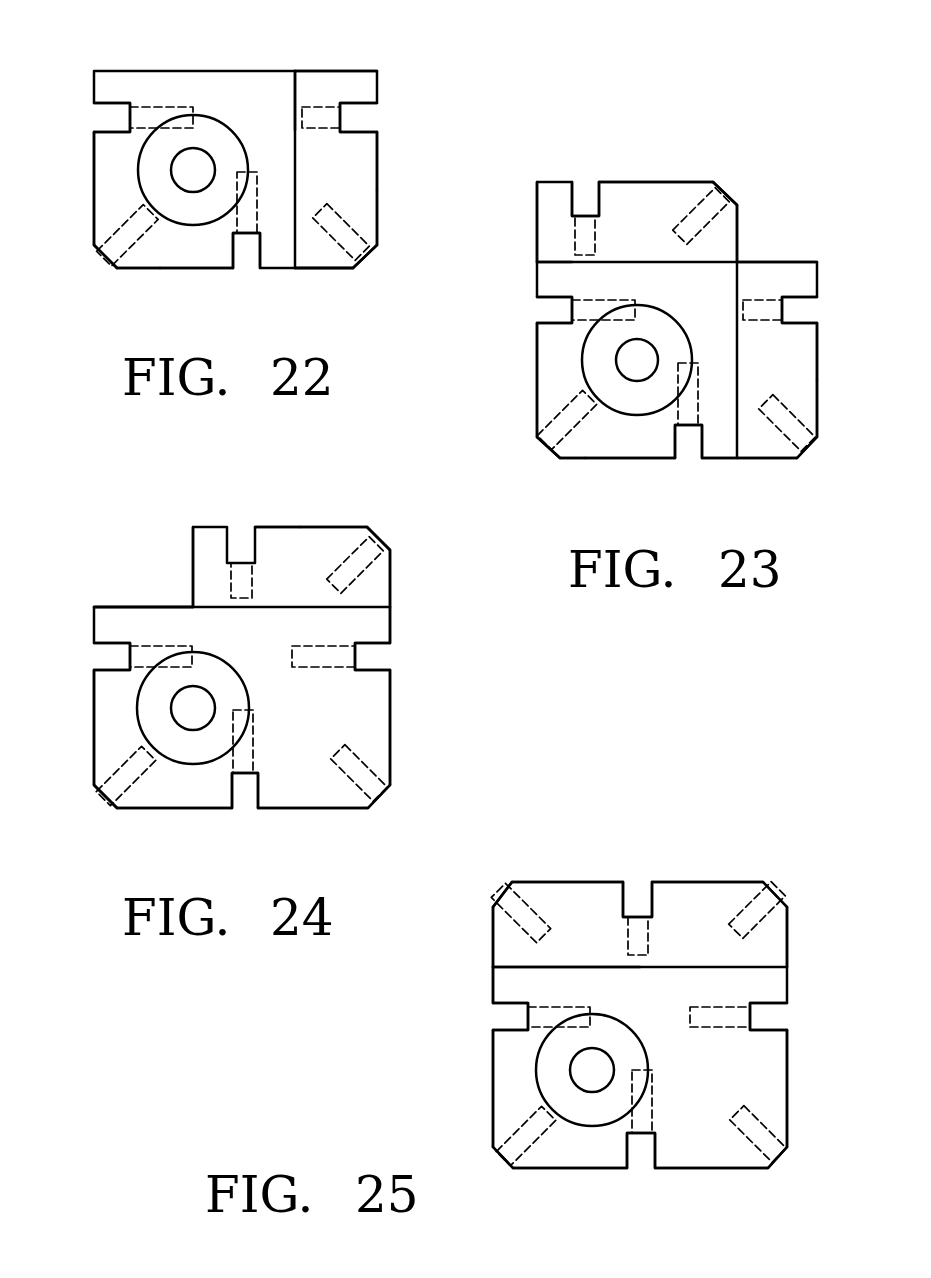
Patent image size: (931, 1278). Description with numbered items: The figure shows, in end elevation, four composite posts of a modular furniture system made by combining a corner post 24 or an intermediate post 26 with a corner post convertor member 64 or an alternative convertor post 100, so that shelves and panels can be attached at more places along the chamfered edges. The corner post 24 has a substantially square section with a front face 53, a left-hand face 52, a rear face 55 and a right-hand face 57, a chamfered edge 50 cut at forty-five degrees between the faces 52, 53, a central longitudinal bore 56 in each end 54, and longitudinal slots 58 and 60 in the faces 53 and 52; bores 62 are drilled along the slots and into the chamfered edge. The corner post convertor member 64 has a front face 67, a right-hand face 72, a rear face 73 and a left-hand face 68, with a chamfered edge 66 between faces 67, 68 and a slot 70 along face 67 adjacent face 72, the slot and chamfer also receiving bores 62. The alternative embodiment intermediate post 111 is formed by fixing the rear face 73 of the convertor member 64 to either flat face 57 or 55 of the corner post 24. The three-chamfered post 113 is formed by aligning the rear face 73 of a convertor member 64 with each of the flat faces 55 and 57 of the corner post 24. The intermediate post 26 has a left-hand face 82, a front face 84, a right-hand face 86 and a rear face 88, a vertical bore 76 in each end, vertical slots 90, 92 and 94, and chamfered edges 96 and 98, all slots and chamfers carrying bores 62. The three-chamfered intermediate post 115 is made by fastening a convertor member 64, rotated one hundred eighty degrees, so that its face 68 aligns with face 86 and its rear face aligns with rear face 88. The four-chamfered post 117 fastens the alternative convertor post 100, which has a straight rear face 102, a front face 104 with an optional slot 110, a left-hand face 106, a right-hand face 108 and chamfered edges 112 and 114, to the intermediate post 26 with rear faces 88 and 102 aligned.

In FIG. 22, the corner post 24 is at (128, 270).
In FIG. 24, the intermediate post 26 is at (108, 607).
In FIG. 25, the intermediate post 26 is at (775, 965).
In FIG. 22, the chamfered edge 50 is at (105, 257).
In FIG. 23, the chamfered edge 50 is at (545, 455).
In FIG. 22, the left-hand face 52 is at (94, 172).
In FIG. 23, the left-hand face 52 is at (537, 365).
In FIG. 22, the front face 53 is at (178, 270).
In FIG. 23, the front face 53 is at (583, 460).
In FIG. 22, the end 54 is at (241, 107).
In FIG. 23, the end 54 is at (698, 306).
In FIG. 23, the rear face 55 is at (545, 262).
In FIG. 22, the central longitudinal bore 56 is at (185, 172).
In FIG. 23, the central longitudinal bore 56 is at (637, 375).
In FIG. 22, the right-hand face 57 is at (292, 118).
In FIG. 23, the right-hand face 57 is at (737, 305).
In FIG. 22, the longitudinal slot 58 is at (253, 270).
In FIG. 23, the longitudinal slot 58 is at (700, 460).
In FIG. 22, the longitudinal slot 60 is at (110, 106).
In FIG. 23, the longitudinal slot 60 is at (545, 300).
In FIG. 22, the bores 62 is at (170, 108).
In FIG. 23, the bores 62 is at (684, 215).
In FIG. 24, the bores 62 is at (348, 555).
In FIG. 25, the bores 62 is at (745, 890).
In FIG. 22, the corner post convertor member 64 is at (378, 225).
In FIG. 23, the corner post convertor member 64 is at (537, 200).
In FIG. 24, the corner post convertor member 64 is at (298, 527).
In FIG. 22, the chamfered edge 66 is at (365, 258).
In FIG. 23, the chamfered edge 66 is at (716, 184).
In FIG. 24, the chamfered edge 66 is at (368, 527).
In FIG. 22, the front face 67 is at (378, 158).
In FIG. 23, the front face 67 is at (620, 182).
In FIG. 24, the front face 67 is at (280, 527).
In FIG. 22, the left-hand face 68 is at (318, 270).
In FIG. 23, the left-hand face 68 is at (740, 205).
In FIG. 24, the left-hand face 68 is at (390, 585).
In FIG. 22, the slot 70 is at (378, 103).
In FIG. 23, the slot 70 is at (570, 182).
In FIG. 22, the right-hand face 72 is at (352, 70).
In FIG. 24, the right-hand face 72 is at (193, 550).
In FIG. 22, the rear face 73 is at (298, 88).
In FIG. 23, the rear face 73 is at (562, 262).
In FIG. 24, the rear face 73 is at (368, 600).
In FIG. 24, the vertical bore 76 is at (192, 728).
In FIG. 25, the vertical bore 76 is at (585, 1078).
In FIG. 24, the left-hand face 82 is at (94, 770).
In FIG. 25, the left-hand face 82 is at (493, 1117).
In FIG. 24, the front face 84 is at (140, 810).
In FIG. 25, the front face 84 is at (563, 1170).
In FIG. 24, the right-hand face 86 is at (390, 713).
In FIG. 25, the right-hand face 86 is at (787, 1065).
In FIG. 24, the rear face 88 is at (143, 607).
In FIG. 25, the rear face 88 is at (493, 960).
In FIG. 24, the vertical slot 90 is at (372, 648).
In FIG. 25, the vertical slot 90 is at (770, 1005).
In FIG. 24, the vertical slot 92 is at (110, 645).
In FIG. 25, the vertical slot 92 is at (505, 1005).
In FIG. 24, the vertical slot 94 is at (252, 792).
In FIG. 25, the vertical slot 94 is at (650, 1160).
In FIG. 24, the chamfered edge 96 is at (382, 795).
In FIG. 25, the chamfered edge 96 is at (782, 1150).
In FIG. 24, the chamfered edge 98 is at (110, 805).
In FIG. 25, the chamfered edge 98 is at (510, 1165).
In FIG. 25, the alternative convertor post 100 is at (548, 882).
In FIG. 25, the rear face 102 is at (502, 966).
In FIG. 25, the front face 104 is at (692, 882).
In FIG. 25, the left-hand face 106 is at (787, 912).
In FIG. 25, the right-hand face 108 is at (493, 905).
In FIG. 25, the vertical longitudinal slot 110 is at (610, 882).
In FIG. 22, the alternative embodiment intermediate post 111 is at (368, 270).
In FIG. 25, the chamfered edge 112 is at (778, 895).
In FIG. 23, the three-chamfered post 113 is at (537, 430).
In FIG. 25, the right-hand chamfered edge 114 is at (505, 892).
In FIG. 24, the three-chamfered intermediate post 115 is at (345, 810).
In FIG. 25, the four-chamfered post 117 is at (720, 1170).